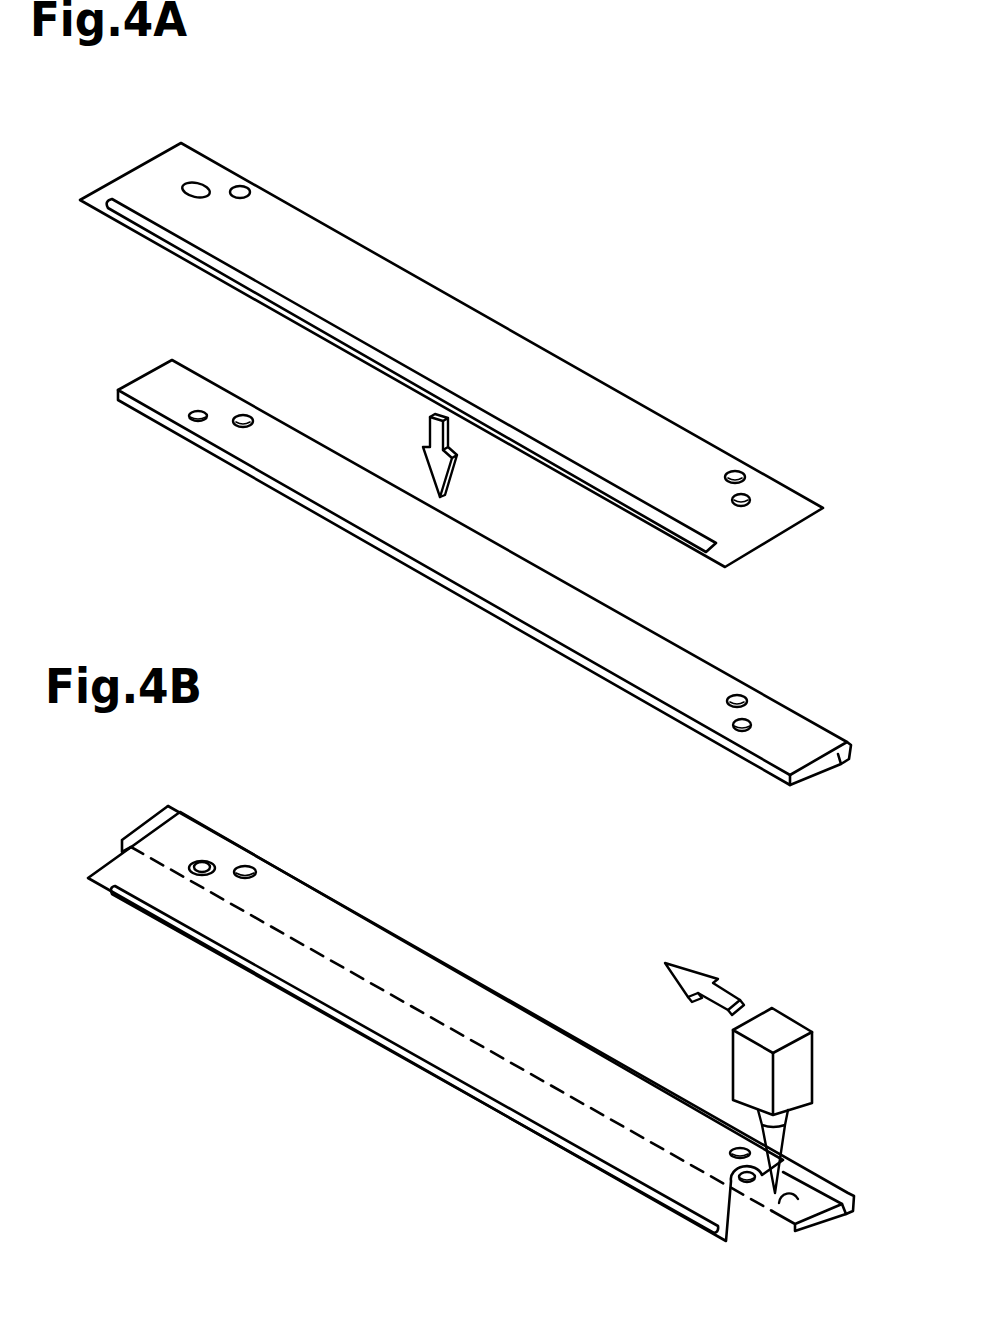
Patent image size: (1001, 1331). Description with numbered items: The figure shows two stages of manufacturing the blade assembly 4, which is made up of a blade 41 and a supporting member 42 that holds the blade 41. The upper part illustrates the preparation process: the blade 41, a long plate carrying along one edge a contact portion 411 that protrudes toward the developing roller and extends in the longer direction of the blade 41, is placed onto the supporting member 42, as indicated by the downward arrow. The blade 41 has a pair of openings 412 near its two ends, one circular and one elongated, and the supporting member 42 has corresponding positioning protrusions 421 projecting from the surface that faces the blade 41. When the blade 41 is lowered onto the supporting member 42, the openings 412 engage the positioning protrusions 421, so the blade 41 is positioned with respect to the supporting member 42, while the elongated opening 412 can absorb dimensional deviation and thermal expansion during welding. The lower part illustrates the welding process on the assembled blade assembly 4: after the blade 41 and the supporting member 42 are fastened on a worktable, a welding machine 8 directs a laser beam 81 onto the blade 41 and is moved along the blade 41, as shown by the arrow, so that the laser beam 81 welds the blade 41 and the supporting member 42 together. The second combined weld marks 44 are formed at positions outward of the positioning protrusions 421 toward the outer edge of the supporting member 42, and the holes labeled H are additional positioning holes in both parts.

In FIG. 4B, the blade assembly 4 is at (485, 1024).
In FIG. 4A, the blade 41 is at (434, 295).
In FIG. 4B, the blade 41 is at (367, 935).
In FIG. 4A, the contact portion 411 is at (410, 370).
In FIG. 4B, the contact portion 411 is at (432, 1077).
In FIG. 4A, the openings 412 is at (199, 184).
In FIG. 4B, the openings 412 is at (207, 866).
In FIG. 4A, the supporting member 42 is at (462, 567).
In FIG. 4B, the supporting member 42 is at (152, 832).
In FIG. 4A, the positioning protrusion 421 is at (200, 411).
In FIG. 4B, the positioning protrusion 421 is at (199, 860).
In FIG. 4B, the second combined weld marks 44 is at (785, 1196).
In FIG. 4B, the welding machine 8 is at (784, 1020).
In FIG. 4B, the laser beam 81 is at (785, 1137).
In FIG. 4A, the positioning hole H is at (241, 188).
In FIG. 4B, the positioning hole H is at (251, 870).